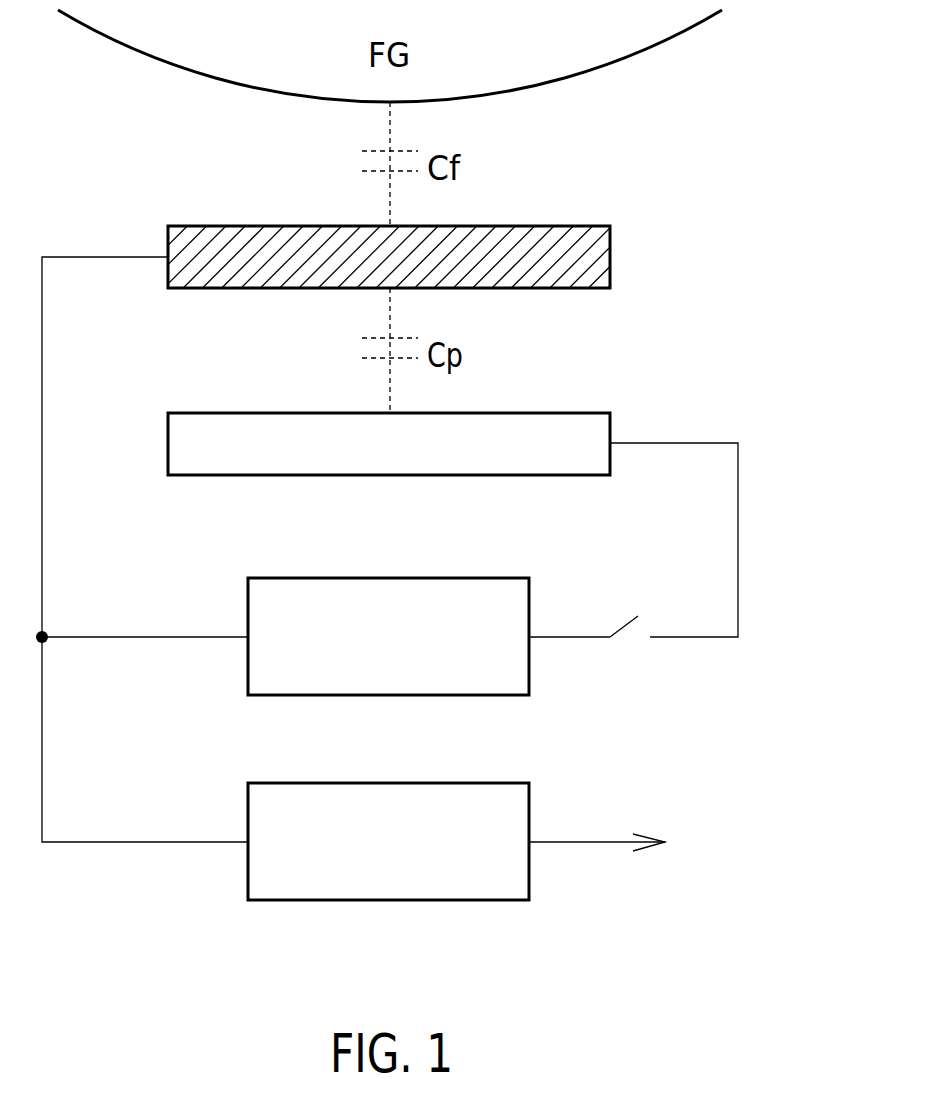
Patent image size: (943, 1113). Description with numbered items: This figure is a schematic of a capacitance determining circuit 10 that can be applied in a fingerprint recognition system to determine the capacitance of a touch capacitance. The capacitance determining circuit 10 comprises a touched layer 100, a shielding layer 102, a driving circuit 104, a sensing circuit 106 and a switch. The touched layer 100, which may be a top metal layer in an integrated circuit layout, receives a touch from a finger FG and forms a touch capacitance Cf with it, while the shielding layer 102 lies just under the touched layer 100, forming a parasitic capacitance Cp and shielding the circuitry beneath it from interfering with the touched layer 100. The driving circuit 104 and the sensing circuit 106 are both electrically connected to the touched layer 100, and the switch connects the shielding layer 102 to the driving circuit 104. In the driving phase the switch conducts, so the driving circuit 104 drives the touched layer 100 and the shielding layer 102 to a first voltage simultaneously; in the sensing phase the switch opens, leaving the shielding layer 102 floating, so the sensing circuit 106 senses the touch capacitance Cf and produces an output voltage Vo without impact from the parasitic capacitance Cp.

The capacitance determining circuit 10 is at (762, 58).
The touched layer 100 is at (560, 226).
The shielding layer 102 is at (560, 413).
The driving circuit 104 is at (480, 578).
The sensing circuit 106 is at (480, 783).